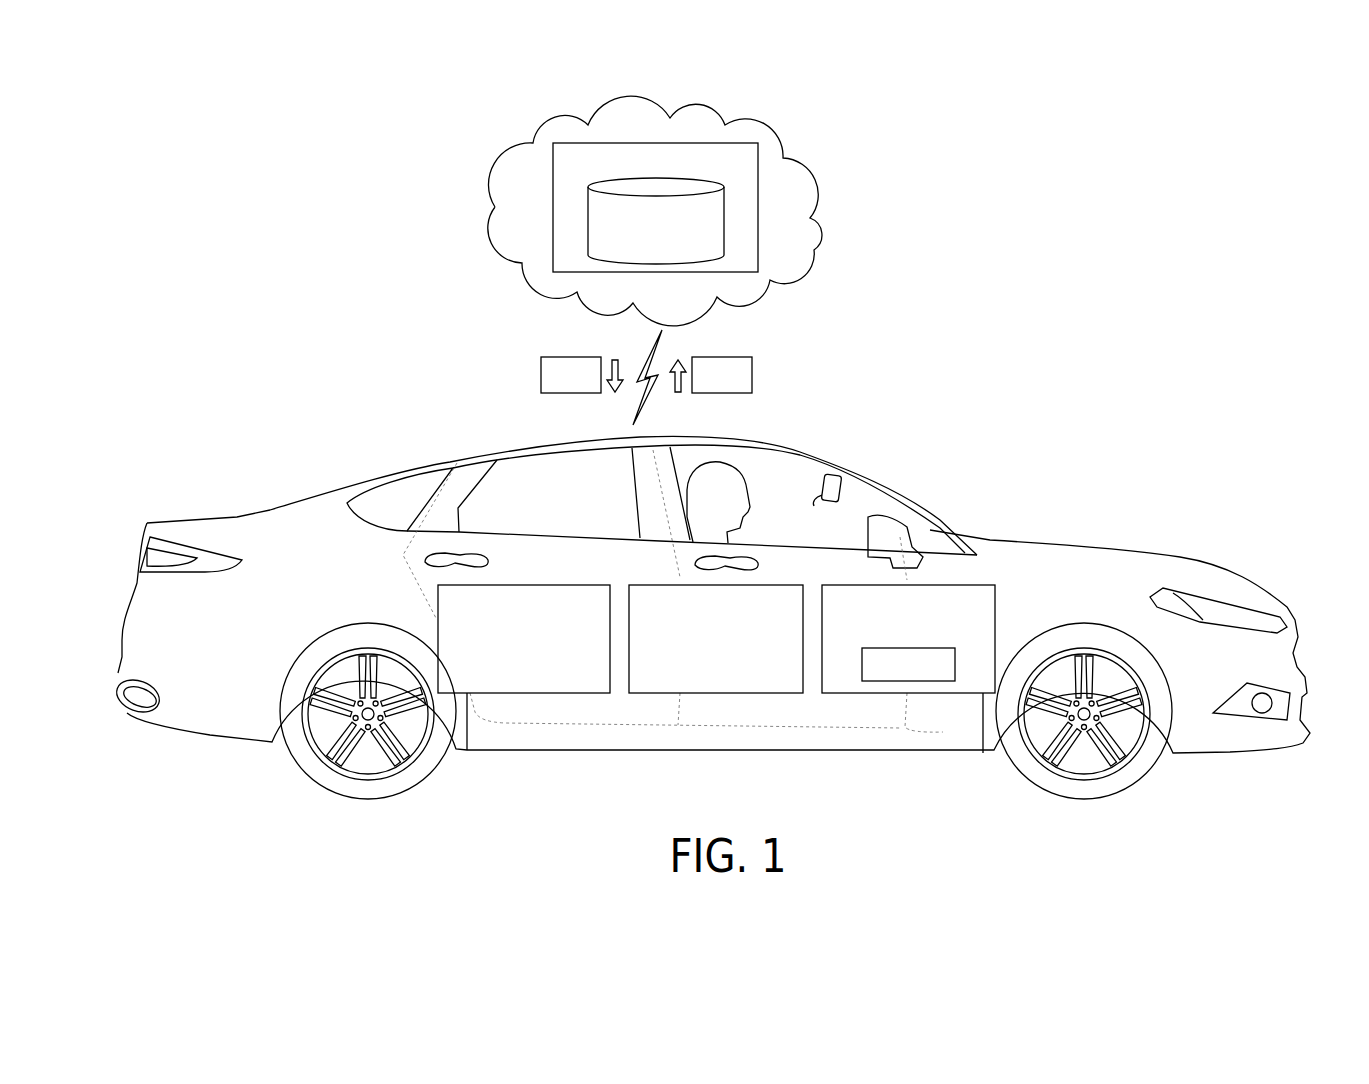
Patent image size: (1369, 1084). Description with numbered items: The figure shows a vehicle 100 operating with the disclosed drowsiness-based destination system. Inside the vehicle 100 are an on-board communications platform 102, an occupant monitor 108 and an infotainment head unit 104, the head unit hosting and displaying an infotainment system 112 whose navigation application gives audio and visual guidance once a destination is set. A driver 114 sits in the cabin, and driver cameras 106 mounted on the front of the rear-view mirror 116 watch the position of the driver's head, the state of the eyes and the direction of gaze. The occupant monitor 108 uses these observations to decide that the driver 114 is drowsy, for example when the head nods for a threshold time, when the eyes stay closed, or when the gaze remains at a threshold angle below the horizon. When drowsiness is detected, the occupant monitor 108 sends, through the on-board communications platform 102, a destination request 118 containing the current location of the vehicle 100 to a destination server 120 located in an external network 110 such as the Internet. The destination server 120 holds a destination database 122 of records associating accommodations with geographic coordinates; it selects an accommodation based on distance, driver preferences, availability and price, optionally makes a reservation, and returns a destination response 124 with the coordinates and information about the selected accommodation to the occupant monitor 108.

The vehicle 100 is at (1167, 553).
The on-board communications platform 102 is at (537, 693).
The infotainment head unit 104 is at (903, 693).
The driver cameras 106 is at (830, 501).
The occupant monitor 108 is at (727, 693).
The external network 110 is at (823, 242).
The infotainment system 112 is at (893, 678).
The driver 114 is at (735, 462).
The rear-view mirror 116 is at (832, 476).
The destination request 118 is at (706, 389).
The destination server 120 is at (758, 180).
The destination database 122 is at (588, 240).
The destination response 124 is at (555, 389).